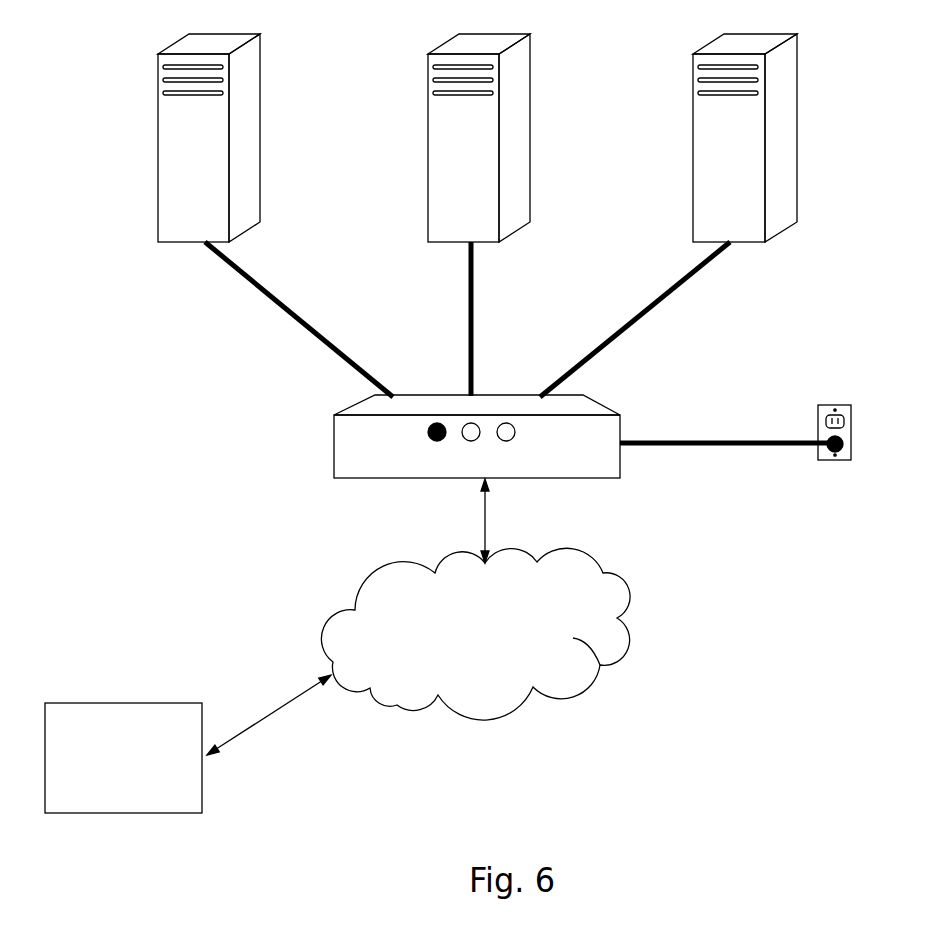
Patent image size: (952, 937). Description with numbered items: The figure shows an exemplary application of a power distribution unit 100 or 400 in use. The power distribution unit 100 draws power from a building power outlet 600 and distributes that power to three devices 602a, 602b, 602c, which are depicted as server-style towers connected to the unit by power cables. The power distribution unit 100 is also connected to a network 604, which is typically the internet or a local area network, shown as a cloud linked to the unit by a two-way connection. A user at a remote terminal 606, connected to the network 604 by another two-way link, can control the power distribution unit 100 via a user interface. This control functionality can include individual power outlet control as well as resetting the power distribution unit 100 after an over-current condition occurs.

The device 602a is at (275, 201).
The device 602b is at (479, 200).
The device 602c is at (668, 201).
The power distribution unit 100 is at (516, 429).
The power distribution unit 400 is at (334, 451).
The building power outlet 600 is at (850, 405).
The network 604 is at (475, 599).
The remote terminal 606 is at (188, 744).